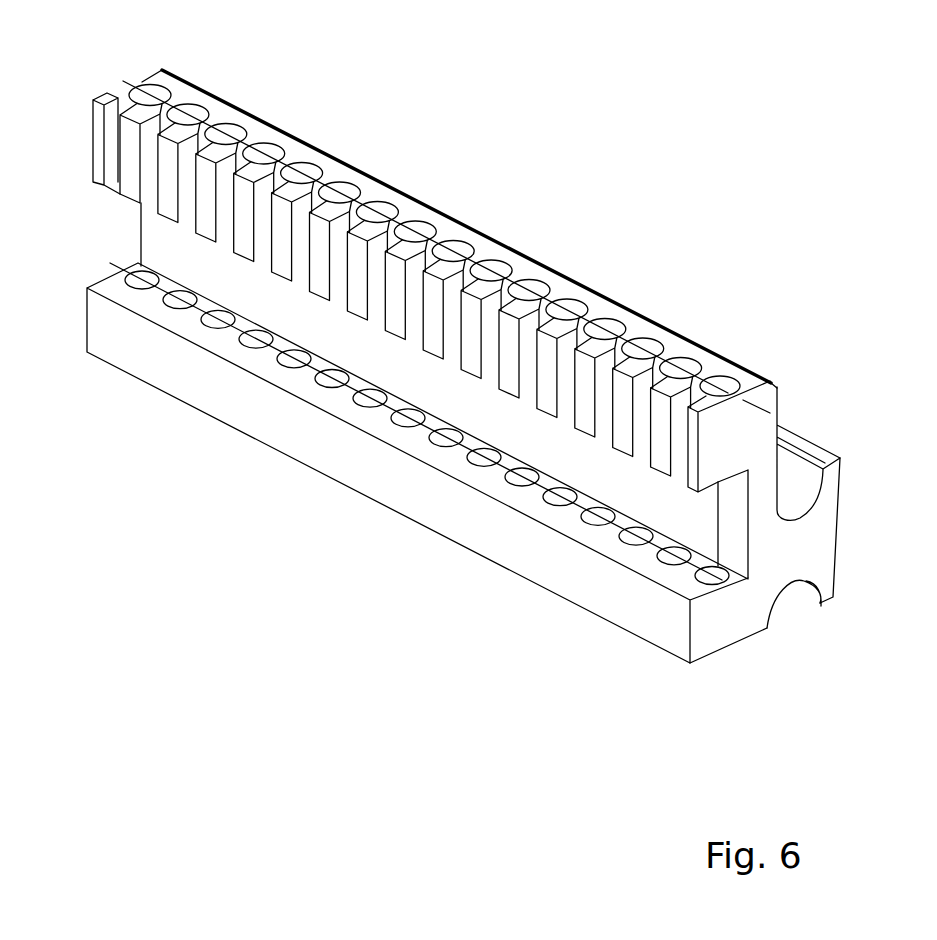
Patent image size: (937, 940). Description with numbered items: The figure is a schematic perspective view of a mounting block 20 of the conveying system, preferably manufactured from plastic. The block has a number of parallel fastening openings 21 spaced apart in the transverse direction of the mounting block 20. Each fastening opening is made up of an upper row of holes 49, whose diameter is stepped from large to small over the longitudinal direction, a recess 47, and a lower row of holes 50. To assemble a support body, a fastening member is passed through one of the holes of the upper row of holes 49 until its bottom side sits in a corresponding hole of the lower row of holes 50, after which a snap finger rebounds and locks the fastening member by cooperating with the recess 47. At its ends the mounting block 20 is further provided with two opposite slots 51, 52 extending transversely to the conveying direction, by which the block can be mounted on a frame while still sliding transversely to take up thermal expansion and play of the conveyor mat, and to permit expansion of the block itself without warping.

The mounting block 20 is at (292, 624).
The fastening openings 21 is at (722, 376).
The recess 47 is at (735, 538).
The upper row of holes 49 is at (146, 79).
The lower row of holes 50 is at (142, 280).
The slot 51 is at (795, 492).
The slot 52 is at (787, 590).